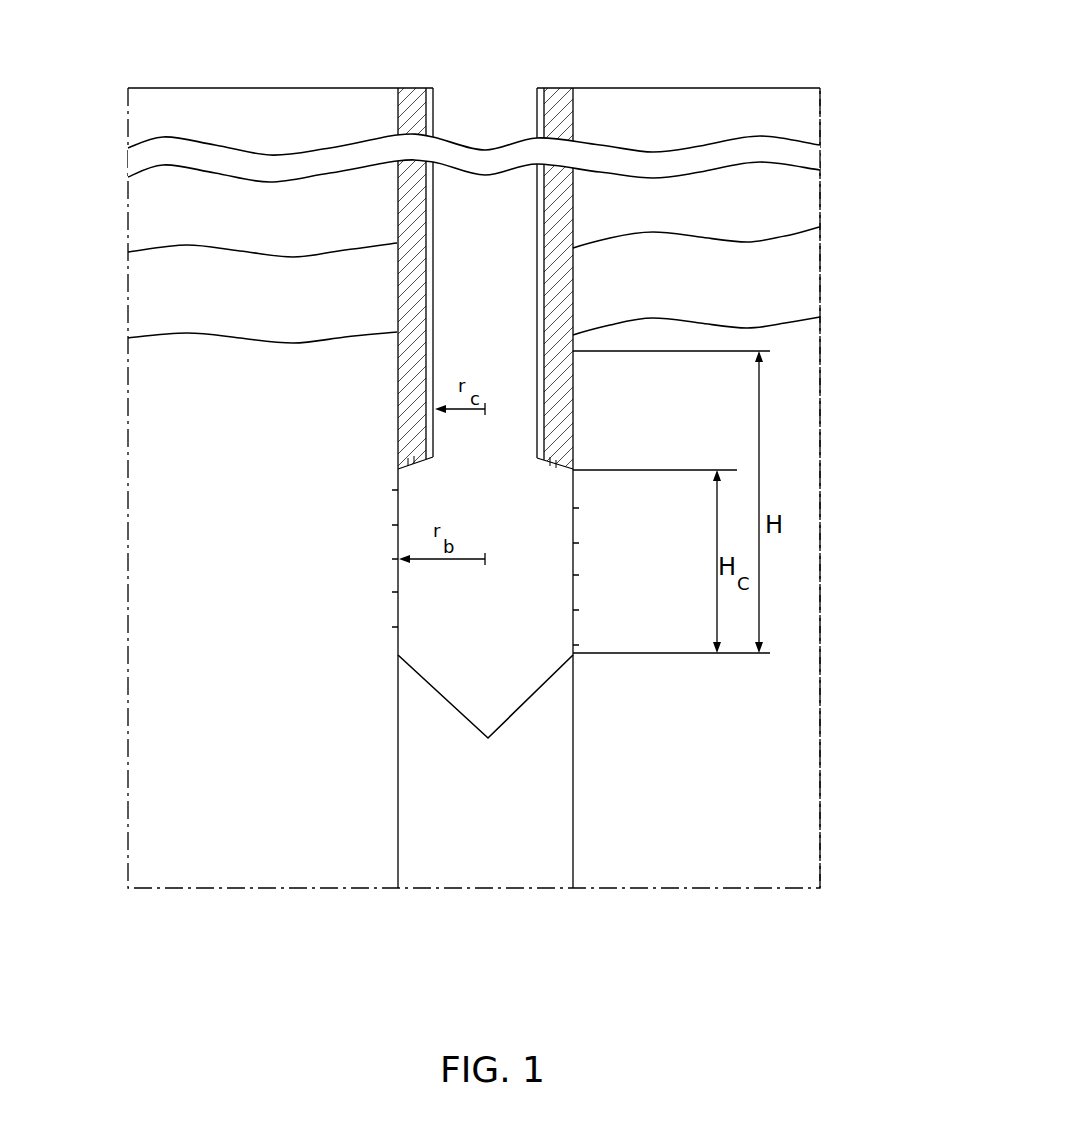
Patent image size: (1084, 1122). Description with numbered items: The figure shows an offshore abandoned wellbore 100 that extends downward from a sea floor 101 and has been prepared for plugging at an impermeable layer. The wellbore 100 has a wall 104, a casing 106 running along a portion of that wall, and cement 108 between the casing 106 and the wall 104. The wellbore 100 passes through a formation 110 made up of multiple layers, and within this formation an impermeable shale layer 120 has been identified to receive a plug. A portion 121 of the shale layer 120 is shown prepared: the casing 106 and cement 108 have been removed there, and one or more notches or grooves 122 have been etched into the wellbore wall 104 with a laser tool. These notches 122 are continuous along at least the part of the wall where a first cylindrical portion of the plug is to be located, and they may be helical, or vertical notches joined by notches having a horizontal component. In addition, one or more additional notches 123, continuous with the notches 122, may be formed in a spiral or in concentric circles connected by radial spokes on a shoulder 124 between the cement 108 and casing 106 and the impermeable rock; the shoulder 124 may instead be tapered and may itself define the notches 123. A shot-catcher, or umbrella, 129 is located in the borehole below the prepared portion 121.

The offshore abandoned wellbore 100 is at (430, 72).
The sea floor 101 is at (730, 88).
The wall 104 is at (573, 199).
The casing 106 is at (546, 100).
The cement 108 is at (550, 122).
The formation 110 is at (700, 297).
The impermeable shale layer 120 is at (797, 440).
The portion of the shale layer 121 is at (380, 531).
The notches or grooves 122 is at (397, 557).
The additional notches 123 is at (412, 460).
The shoulder 124 is at (562, 480).
The shot-catcher 129 is at (535, 693).